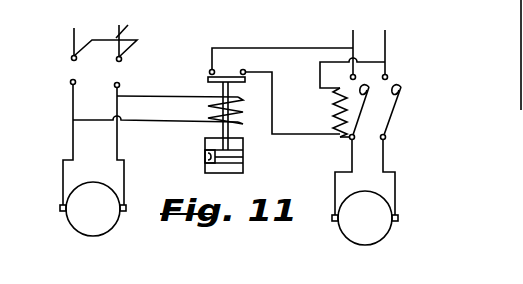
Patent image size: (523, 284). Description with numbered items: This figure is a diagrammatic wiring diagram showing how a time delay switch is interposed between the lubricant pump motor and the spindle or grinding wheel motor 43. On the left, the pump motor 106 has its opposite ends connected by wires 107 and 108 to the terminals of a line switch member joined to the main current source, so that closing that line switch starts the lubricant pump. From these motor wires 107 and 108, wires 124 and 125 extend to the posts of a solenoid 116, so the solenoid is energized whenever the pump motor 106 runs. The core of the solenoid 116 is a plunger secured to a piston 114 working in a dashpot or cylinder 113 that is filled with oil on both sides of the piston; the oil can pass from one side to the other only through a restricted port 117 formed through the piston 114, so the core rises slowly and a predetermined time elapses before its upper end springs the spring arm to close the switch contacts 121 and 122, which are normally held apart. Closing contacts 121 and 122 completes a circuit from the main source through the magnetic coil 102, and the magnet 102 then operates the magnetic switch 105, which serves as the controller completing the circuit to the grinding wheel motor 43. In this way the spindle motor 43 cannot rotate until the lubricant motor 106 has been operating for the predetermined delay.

The grinding wheel motor 43 is at (383, 240).
The magnetic coil 102 is at (332, 109).
The magnetic switch 105 is at (384, 93).
The motor 106 is at (98, 229).
The wire 107 is at (70, 144).
The wire 108 is at (117, 146).
The dashpot or cylinder 113 is at (245, 172).
The piston 114 is at (238, 158).
The solenoid 116 is at (212, 105).
The restricted port 117 is at (208, 163).
The switch contact 121 is at (209, 70).
The switch contact 122 is at (246, 70).
The wire 124 is at (181, 93).
The wire 125 is at (187, 126).